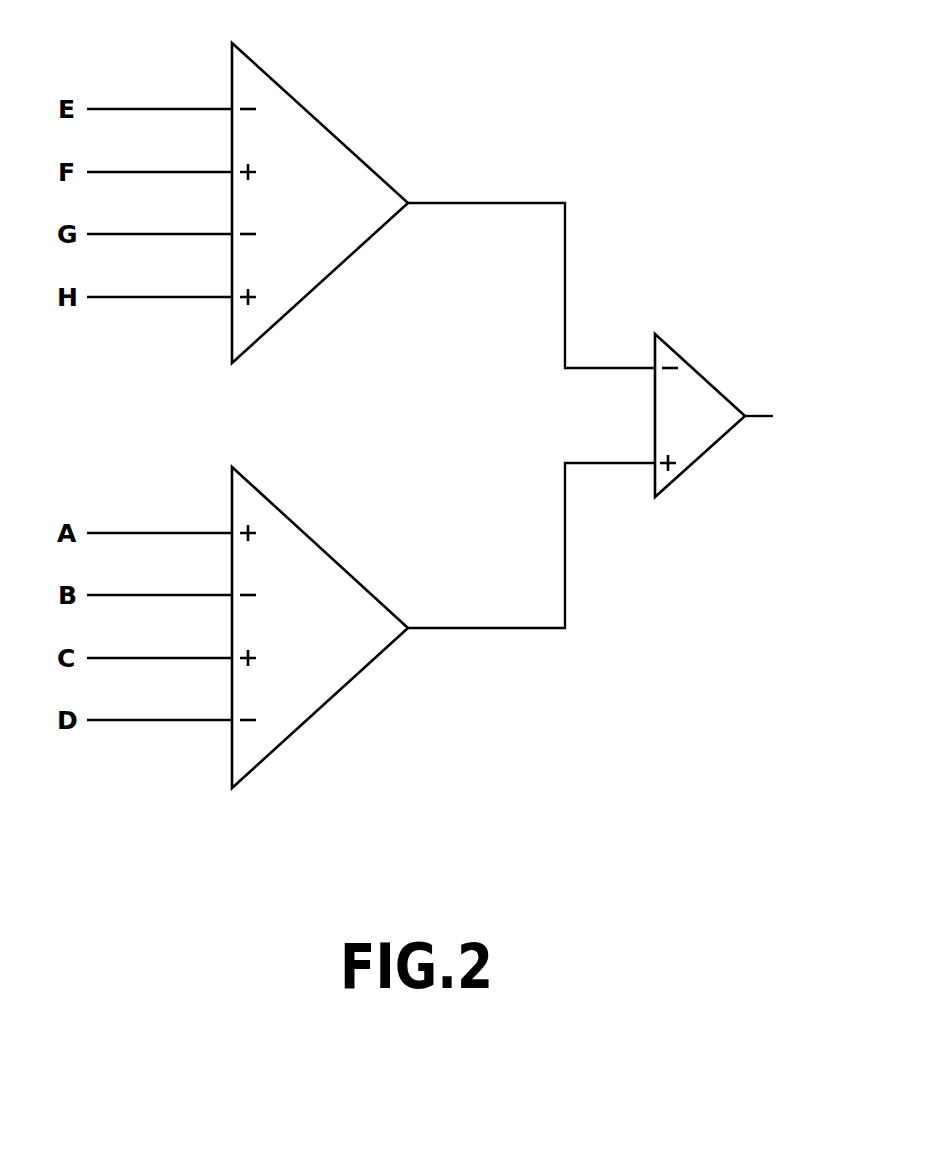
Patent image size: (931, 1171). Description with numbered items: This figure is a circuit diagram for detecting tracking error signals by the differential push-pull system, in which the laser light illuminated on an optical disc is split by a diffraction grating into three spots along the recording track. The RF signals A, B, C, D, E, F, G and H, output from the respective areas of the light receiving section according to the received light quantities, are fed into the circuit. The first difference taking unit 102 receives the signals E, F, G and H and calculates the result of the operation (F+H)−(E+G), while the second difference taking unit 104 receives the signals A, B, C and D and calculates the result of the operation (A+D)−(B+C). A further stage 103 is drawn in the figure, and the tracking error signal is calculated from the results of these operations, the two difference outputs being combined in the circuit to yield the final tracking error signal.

The first difference taking unit 102 is at (285, 92).
The second differential amplifier (A+D)-(B+C) 103 is at (338, 693).
The second difference taking unit 104 is at (697, 462).